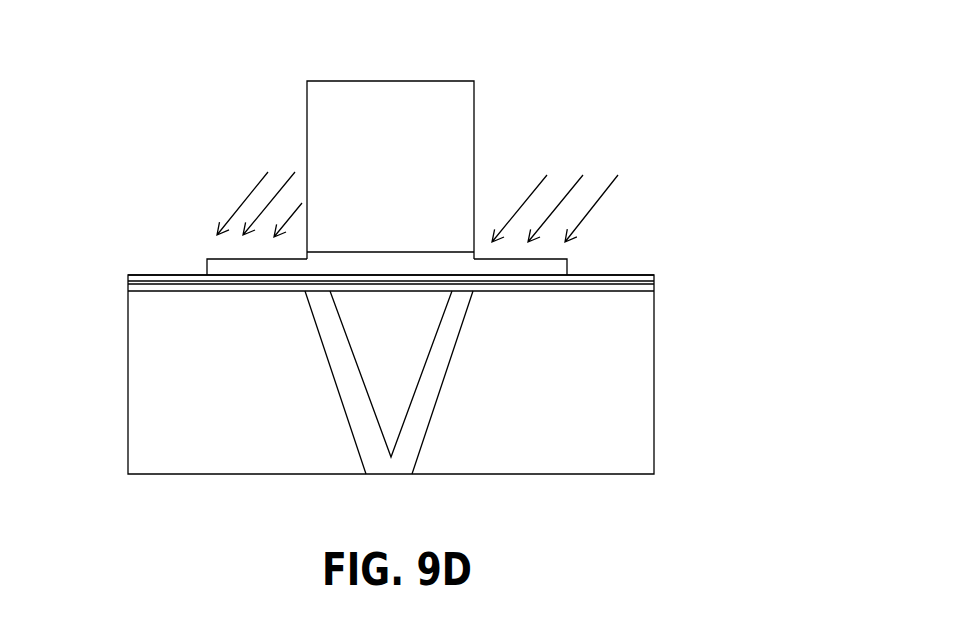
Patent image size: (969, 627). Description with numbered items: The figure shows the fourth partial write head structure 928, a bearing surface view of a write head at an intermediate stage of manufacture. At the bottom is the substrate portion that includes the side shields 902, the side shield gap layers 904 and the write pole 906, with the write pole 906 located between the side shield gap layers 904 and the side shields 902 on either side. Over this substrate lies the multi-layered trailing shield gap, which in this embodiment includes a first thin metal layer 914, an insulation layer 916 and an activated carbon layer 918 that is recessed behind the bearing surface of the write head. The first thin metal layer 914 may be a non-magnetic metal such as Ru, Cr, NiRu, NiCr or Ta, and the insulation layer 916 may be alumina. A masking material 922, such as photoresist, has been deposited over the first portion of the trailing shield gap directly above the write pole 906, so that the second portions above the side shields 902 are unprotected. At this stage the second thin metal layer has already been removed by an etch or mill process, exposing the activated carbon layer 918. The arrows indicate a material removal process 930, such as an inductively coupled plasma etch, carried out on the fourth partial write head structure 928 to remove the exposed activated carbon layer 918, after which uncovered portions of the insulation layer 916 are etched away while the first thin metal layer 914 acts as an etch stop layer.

The side shields 902 is at (155, 420).
The side shield gap layers 904 is at (357, 402).
The write pole 906 is at (409, 349).
The first thin metal layer 914 is at (130, 288).
The insulation layer 916 is at (130, 278).
The activated carbon layer 918 is at (237, 267).
The masking material 922 is at (452, 129).
The fourth partial write head structure 928 is at (518, 64).
The material removal process 930 is at (625, 192).